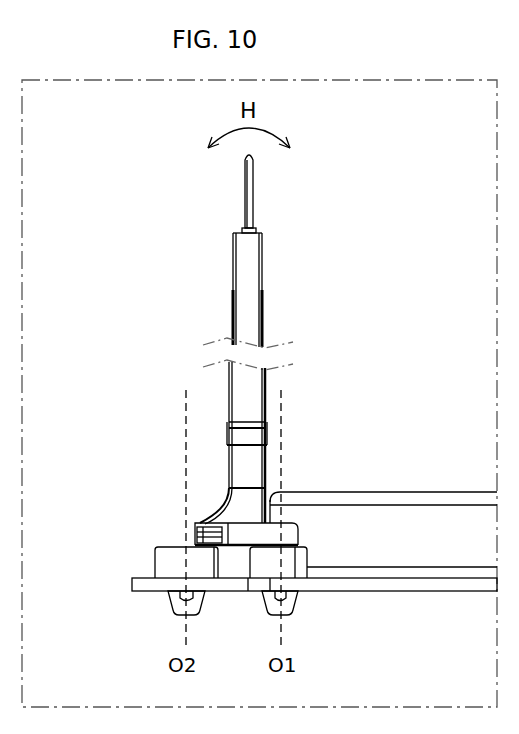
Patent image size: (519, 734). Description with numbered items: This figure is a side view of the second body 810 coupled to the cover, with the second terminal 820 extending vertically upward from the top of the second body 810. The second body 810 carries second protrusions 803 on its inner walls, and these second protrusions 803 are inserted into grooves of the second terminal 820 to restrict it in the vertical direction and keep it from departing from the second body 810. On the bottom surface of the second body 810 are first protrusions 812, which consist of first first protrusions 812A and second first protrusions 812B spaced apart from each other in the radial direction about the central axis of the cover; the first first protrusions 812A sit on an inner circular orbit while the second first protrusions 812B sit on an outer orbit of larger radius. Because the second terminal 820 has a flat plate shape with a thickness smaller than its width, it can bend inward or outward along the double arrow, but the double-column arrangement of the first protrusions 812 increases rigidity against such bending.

The second terminal 820 is at (254, 190).
The second body 810 is at (262, 283).
The second protrusion 803 is at (215, 517).
The first protrusion 812 is at (232, 606).
The first first protrusion 812A is at (288, 607).
The second first protrusion 812B is at (178, 607).